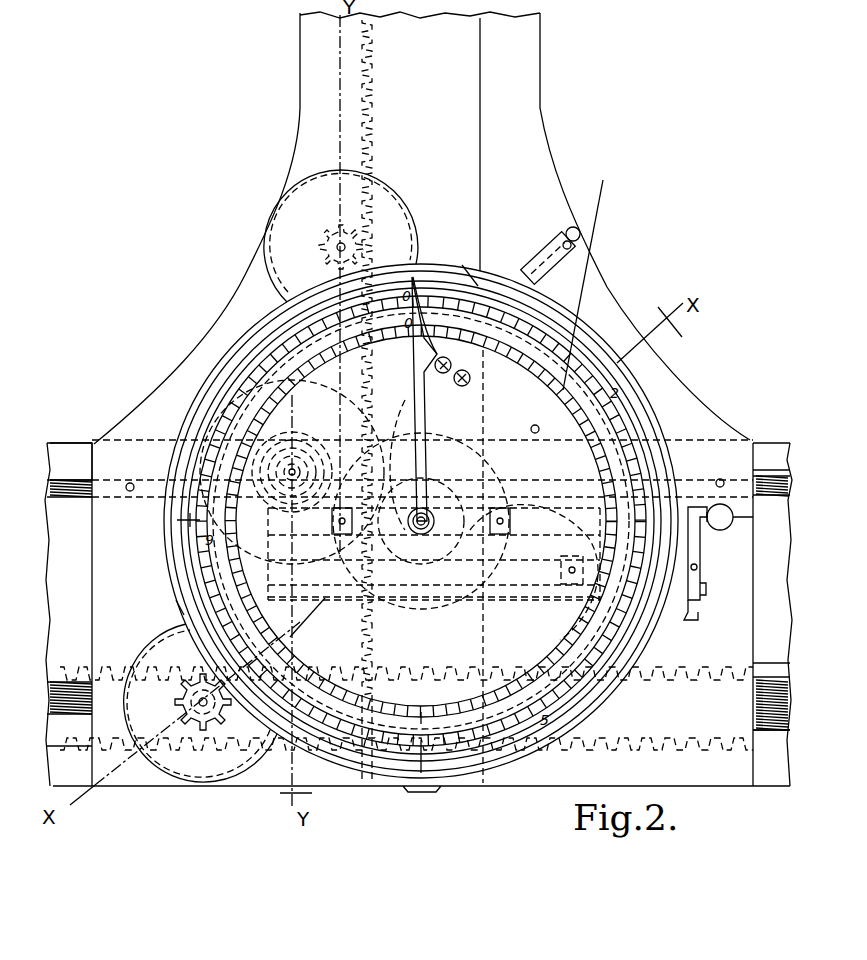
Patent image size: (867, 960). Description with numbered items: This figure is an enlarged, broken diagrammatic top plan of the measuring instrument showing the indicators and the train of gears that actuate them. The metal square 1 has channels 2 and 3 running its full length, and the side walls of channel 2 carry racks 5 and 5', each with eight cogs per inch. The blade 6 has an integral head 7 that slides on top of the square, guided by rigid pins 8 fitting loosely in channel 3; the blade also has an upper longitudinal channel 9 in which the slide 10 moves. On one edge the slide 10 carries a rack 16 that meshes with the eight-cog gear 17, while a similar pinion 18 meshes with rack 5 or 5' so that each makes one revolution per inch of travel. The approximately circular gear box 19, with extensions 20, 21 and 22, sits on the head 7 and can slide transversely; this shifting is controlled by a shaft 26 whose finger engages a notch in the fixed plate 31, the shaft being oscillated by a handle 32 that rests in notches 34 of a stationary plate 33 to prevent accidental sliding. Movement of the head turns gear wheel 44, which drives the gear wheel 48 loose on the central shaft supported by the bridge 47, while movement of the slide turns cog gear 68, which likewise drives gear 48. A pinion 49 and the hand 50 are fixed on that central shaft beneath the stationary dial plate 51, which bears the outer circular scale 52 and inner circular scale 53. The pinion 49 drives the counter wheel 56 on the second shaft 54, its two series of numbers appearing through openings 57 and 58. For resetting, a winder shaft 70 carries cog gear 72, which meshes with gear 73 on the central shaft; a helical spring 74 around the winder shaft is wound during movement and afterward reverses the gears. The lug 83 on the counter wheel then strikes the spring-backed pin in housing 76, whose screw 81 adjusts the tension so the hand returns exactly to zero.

The square 1 is at (772, 614).
The channel 2 is at (421, 771).
The channel 3 is at (71, 461).
The rack 5 is at (739, 644).
The rack 5' is at (740, 709).
The blade 6 is at (628, 226).
The head 7 is at (68, 614).
The pins 8 is at (722, 478).
The upper longitudinal channel 9 is at (421, 535).
The slide 10 is at (317, 228).
The rack 16 is at (360, 110).
The gear 17 is at (312, 231).
The pinion 18 is at (163, 777).
The gear box 19 is at (178, 573).
The extension 20 is at (418, 228).
The extension 21 is at (133, 653).
The extension 22 is at (663, 377).
The shaft 26 is at (703, 587).
The fixed plate 31 is at (315, 618).
The handle 32 is at (745, 517).
The stationary plate 33 is at (683, 575).
The notches 34 is at (687, 622).
The gear wheel 44 is at (222, 780).
The bridge 47 is at (464, 507).
The gear wheel 48 is at (395, 667).
The pinion 49 is at (431, 465).
The hand 50 is at (420, 343).
The dial plate 51 is at (210, 390).
The outer circular scale 52 is at (586, 269).
The inner circular scale 53 is at (580, 413).
The second shaft 54 is at (533, 430).
The counter wheel 56 is at (507, 553).
The opening 57 is at (470, 378).
The opening 58 is at (443, 373).
The cog gear 68 is at (262, 318).
The winder shaft 70 is at (172, 543).
The cog gear 72 is at (354, 411).
The gear 73 is at (423, 572).
The helical spring 74 is at (444, 546).
The housing 76 is at (545, 245).
The screw 81 is at (573, 226).
The lug 83 is at (466, 265).